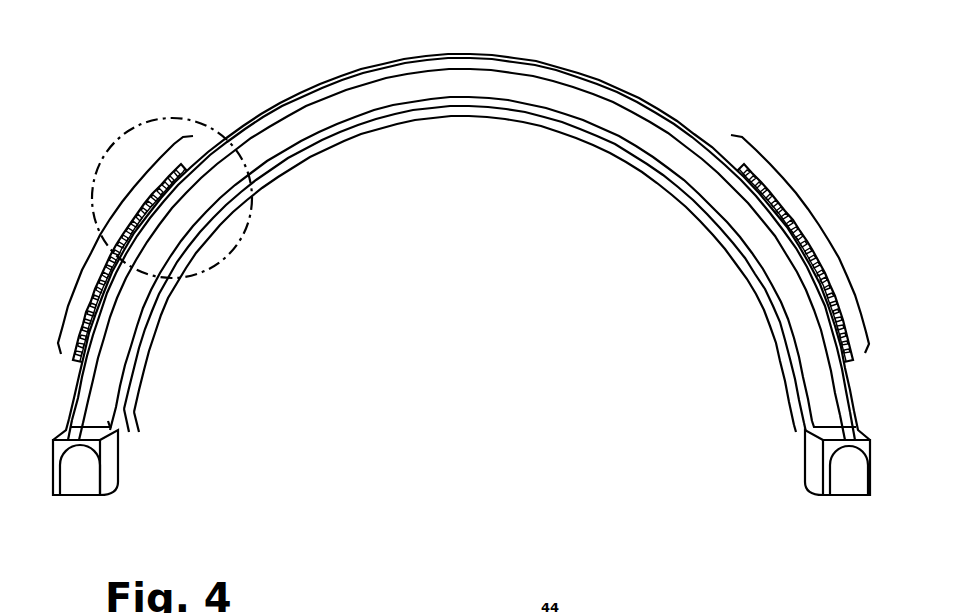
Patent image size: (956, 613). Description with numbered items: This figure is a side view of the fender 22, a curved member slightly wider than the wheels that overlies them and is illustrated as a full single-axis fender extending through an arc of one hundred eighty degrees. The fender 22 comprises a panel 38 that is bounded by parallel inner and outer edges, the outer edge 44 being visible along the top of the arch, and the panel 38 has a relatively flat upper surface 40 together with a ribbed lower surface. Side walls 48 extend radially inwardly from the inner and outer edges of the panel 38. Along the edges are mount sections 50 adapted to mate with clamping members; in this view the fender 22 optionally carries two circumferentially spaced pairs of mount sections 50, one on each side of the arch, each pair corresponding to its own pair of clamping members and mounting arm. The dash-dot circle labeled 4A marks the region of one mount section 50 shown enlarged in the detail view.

The fender 22 is at (507, 18).
The panel 38 is at (282, 100).
The upper surface 40 is at (323, 83).
The outer edge 44 is at (377, 68).
The side walls 48 is at (383, 90).
The mount sections 50 is at (103, 230).
The detail view circle 4A is at (193, 118).